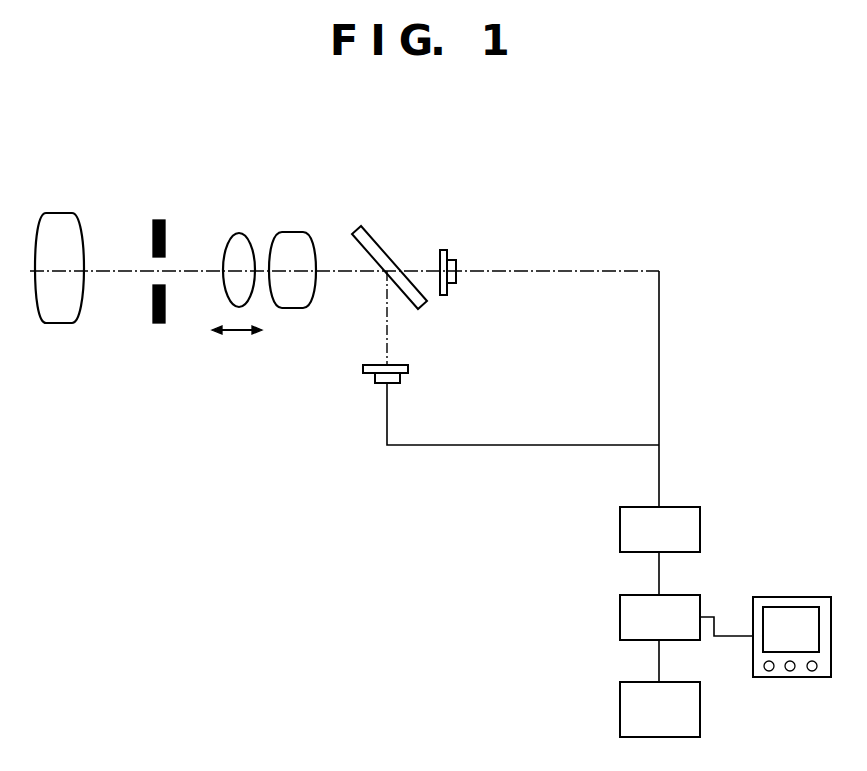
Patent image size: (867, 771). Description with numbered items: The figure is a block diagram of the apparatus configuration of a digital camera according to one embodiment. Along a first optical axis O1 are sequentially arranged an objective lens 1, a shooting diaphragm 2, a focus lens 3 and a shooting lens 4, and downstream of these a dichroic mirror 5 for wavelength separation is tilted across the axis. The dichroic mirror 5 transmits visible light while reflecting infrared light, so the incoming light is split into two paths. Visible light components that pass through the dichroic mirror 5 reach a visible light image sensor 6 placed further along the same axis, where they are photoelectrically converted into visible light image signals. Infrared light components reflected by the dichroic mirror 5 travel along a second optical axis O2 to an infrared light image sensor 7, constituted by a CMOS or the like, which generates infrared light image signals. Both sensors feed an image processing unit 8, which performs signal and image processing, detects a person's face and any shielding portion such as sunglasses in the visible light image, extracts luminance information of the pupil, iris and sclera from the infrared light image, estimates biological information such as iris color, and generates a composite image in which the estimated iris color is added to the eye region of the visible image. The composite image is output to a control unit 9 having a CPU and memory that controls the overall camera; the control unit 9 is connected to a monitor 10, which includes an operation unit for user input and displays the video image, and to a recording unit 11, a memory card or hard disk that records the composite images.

The objective lens 1 is at (58, 213).
The shooting diaphragm 2 is at (157, 220).
The focus lens 3 is at (236, 232).
The shooting lens 4 is at (292, 232).
The dichroic mirror 5 is at (381, 244).
The visible light image sensor 6 is at (444, 250).
The infrared light image sensor 7 is at (408, 369).
The image processing unit 8 is at (620, 517).
The control unit 9 is at (620, 600).
The monitor 10 is at (810, 597).
The recording unit 11 is at (620, 697).
The optical axis O1 is at (113, 270).
The optical axis O2 is at (386, 335).